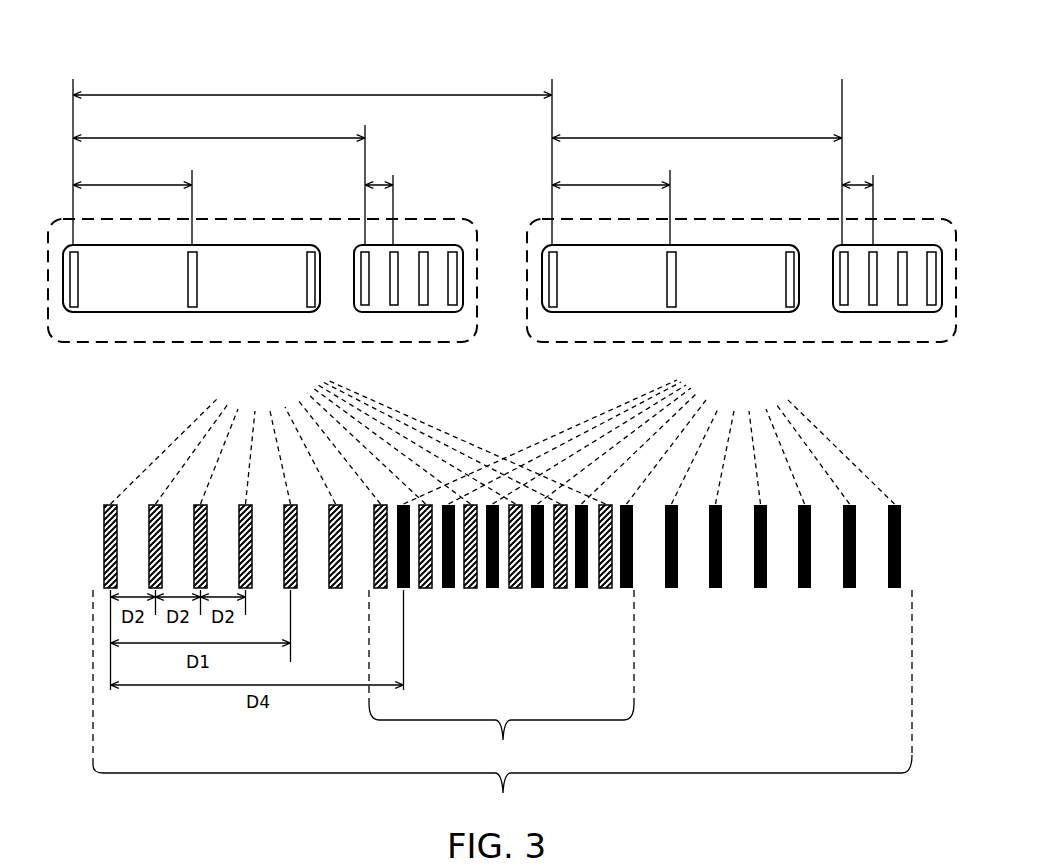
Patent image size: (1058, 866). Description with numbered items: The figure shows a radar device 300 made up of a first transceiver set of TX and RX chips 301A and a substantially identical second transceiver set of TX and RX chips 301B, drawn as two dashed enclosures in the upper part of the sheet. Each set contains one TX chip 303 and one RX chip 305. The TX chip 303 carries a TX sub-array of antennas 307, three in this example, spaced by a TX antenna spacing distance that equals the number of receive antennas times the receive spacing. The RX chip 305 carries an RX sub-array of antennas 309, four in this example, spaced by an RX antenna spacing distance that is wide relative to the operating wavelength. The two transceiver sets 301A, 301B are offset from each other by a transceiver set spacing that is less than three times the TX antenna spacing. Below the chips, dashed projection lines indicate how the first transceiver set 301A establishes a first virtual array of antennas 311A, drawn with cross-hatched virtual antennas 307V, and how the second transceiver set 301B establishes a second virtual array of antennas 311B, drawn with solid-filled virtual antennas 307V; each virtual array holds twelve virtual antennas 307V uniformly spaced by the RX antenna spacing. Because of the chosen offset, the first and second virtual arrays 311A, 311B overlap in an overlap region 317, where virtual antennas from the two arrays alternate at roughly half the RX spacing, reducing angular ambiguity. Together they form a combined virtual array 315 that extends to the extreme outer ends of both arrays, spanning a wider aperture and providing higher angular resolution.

The radar device 300 is at (522, 50).
The first transceiver set of TX and RX chips 301A is at (282, 218).
The second transceiver set of TX and RX chips 301B is at (761, 218).
The TX chip 303 is at (155, 312).
The RX chip 305 is at (411, 312).
The TX sub-array antenna 307 is at (197, 291).
The RX sub-array antenna 309 is at (398, 278).
The first virtual array of antennas 311A is at (365, 395).
The second virtual array of antennas 311B is at (581, 425).
The virtual antenna 307V is at (499, 468).
The overlap region 317 is at (487, 730).
The combined virtual array 315 is at (520, 790).